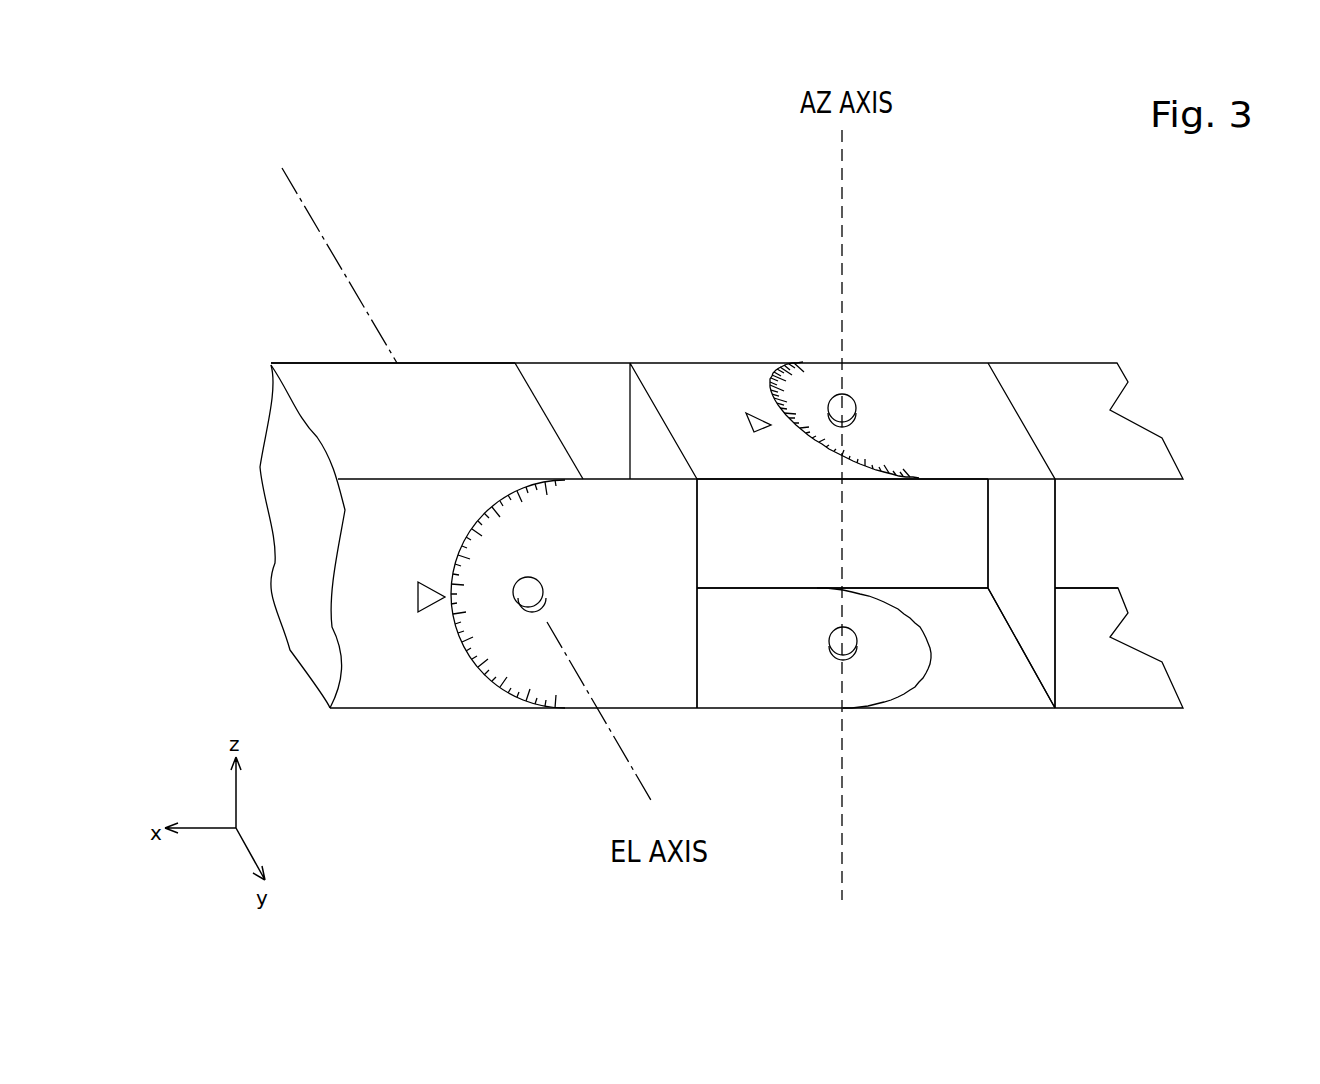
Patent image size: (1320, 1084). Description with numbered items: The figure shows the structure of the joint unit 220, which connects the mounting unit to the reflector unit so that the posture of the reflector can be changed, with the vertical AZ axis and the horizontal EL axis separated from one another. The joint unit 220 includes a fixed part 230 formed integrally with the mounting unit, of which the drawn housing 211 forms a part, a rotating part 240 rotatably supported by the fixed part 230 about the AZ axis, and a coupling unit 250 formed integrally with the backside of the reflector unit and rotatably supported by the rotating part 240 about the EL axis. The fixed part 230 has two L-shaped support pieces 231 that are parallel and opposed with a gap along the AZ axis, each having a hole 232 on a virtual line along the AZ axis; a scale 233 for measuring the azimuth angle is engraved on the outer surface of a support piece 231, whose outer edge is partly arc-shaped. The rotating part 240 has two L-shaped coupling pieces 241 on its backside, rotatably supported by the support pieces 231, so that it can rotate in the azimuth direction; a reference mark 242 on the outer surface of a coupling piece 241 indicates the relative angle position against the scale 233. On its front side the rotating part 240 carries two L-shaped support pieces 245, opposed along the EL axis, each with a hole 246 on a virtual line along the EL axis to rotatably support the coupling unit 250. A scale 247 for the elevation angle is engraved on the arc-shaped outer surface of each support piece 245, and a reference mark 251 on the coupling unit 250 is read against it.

The housing (base part) 211 is at (1033, 395).
The joint unit 220 is at (669, 277).
The fixed part 230 is at (1020, 533).
The support piece 231 is at (922, 395).
The hole 232 is at (857, 418).
The scale 233 is at (813, 400).
The rotating part 240 is at (613, 398).
The coupling piece 241 is at (707, 417).
The reference mark 242 is at (763, 412).
The support piece 245 is at (547, 390).
The hole 246 is at (533, 580).
The scale 247 is at (510, 639).
The coupling unit 250 is at (343, 382).
The reference mark 251 is at (418, 597).